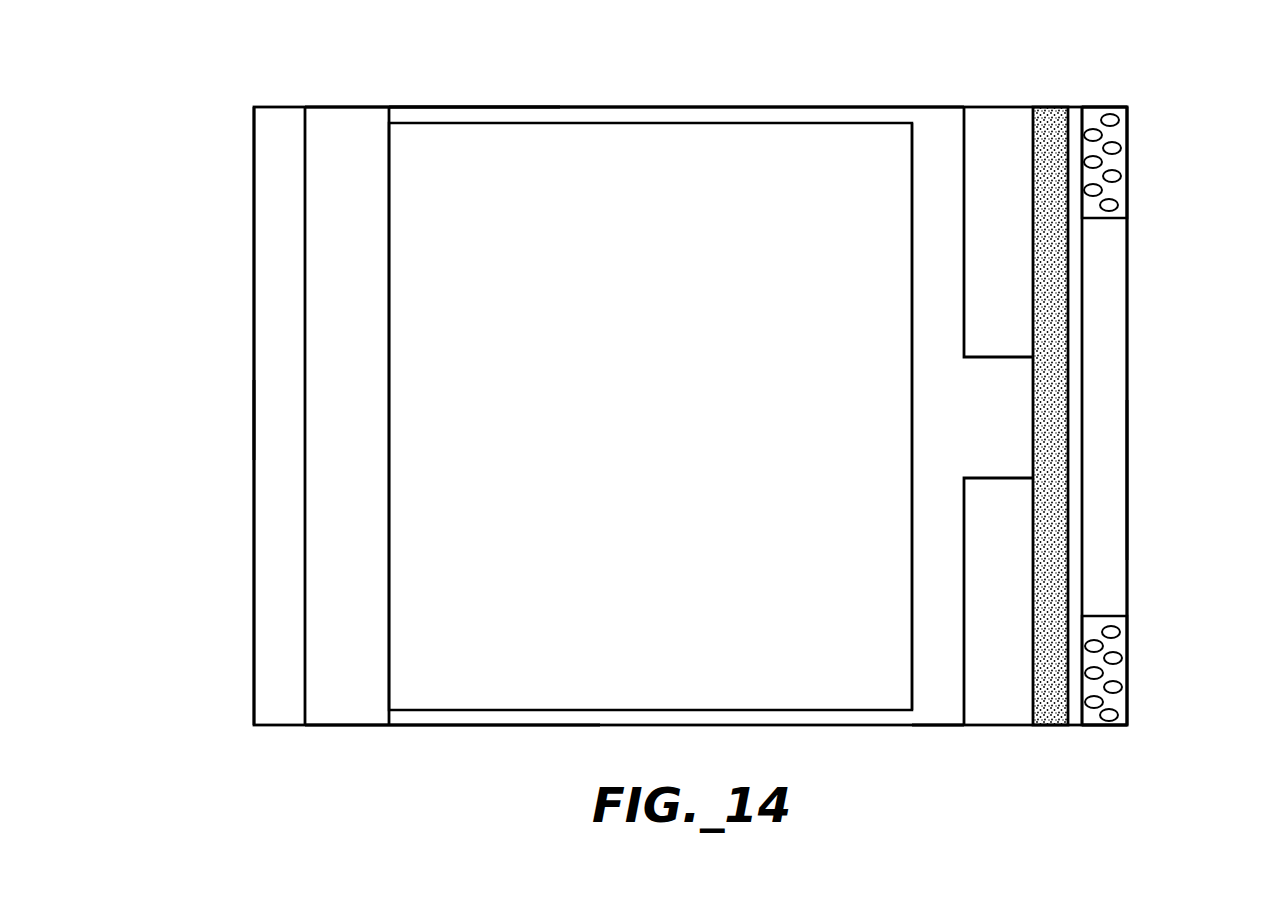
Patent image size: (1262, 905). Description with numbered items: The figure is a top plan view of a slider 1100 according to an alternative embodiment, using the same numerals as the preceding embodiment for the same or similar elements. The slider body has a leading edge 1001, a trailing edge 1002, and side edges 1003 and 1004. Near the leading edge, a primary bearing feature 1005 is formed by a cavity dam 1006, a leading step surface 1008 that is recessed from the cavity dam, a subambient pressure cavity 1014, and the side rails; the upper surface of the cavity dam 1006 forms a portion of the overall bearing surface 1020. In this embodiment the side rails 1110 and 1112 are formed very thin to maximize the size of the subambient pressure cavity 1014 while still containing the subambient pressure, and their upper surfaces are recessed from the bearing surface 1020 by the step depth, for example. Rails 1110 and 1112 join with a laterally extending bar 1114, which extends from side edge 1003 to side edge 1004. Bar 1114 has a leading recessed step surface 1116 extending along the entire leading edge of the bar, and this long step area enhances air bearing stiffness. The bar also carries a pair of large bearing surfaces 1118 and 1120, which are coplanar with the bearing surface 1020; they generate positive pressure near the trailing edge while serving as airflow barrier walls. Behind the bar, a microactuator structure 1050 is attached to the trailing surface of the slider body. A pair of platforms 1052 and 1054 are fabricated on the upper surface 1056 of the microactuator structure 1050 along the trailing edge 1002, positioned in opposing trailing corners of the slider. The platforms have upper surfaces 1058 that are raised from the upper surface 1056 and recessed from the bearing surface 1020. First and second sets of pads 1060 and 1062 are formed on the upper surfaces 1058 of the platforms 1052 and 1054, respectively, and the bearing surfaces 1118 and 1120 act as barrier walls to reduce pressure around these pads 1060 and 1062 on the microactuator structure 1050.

The slider 1100 is at (245, 86).
The leading edge 1001 is at (250, 568).
The leading step surface 1008 is at (271, 415).
The cavity dam 1006 is at (318, 251).
The bearing surface 1020 is at (327, 187).
The side edge 1003 is at (331, 106).
The side edge 1004 is at (350, 727).
The primary bearing feature 1005 is at (725, 73).
The side rail 1110 is at (471, 104).
The side rail 1112 is at (524, 728).
The subambient pressure cavity 1014 is at (652, 407).
The leading recessed step surface 1116 is at (925, 427).
The laterally extending bar 1114 is at (937, 692).
The bearing surface 1118 is at (997, 118).
The bearing surface 1120 is at (988, 713).
The microactuator structure 1050 is at (1126, 80).
The platform 1052 is at (1130, 98).
The platform 1054 is at (1100, 731).
The upper surface 1056 is at (1115, 357).
The trailing edge 1002 is at (1128, 478).
The upper surface 1058 is at (1097, 212).
The first set of pads 1060 is at (1117, 207).
The second set of pads 1062 is at (1120, 695).